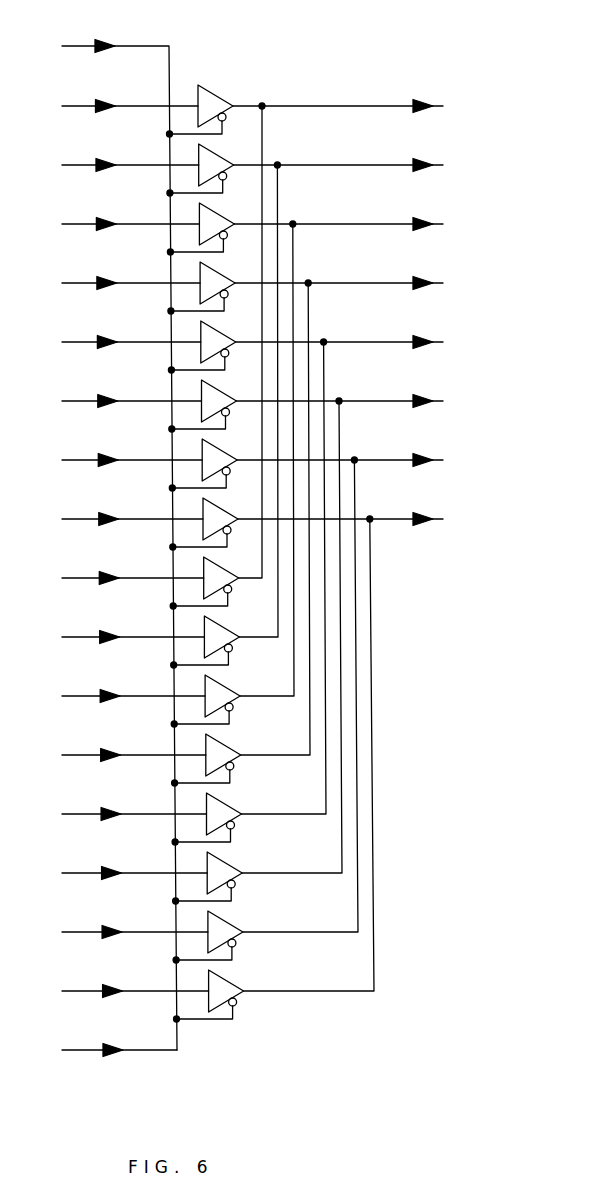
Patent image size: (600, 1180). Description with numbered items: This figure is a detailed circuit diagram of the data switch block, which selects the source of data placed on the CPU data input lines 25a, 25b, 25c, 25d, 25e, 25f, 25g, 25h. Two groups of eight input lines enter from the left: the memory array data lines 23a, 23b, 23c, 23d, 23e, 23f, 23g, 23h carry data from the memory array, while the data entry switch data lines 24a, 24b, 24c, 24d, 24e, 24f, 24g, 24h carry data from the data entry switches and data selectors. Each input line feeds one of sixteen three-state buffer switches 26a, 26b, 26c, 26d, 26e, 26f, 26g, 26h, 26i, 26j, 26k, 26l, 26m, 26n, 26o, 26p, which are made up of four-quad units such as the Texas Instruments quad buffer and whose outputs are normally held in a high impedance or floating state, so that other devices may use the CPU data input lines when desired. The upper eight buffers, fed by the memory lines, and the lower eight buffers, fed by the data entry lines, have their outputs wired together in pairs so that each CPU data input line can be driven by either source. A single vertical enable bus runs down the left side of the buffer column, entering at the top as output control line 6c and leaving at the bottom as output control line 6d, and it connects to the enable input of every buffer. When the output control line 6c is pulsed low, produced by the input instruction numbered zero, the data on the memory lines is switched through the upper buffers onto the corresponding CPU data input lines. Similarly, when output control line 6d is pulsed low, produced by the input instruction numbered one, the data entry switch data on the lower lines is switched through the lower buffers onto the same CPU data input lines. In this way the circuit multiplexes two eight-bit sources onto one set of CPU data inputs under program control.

The output control line 6c is at (132, 44).
The output control line 6d is at (158, 1052).
The memory array data line 23a is at (137, 104).
The memory array data line 23b is at (138, 163).
The memory array data line 23c is at (138, 222).
The memory array data line 23d is at (139, 281).
The memory array data line 23e is at (140, 340).
The memory array data line 23f is at (140, 399).
The memory array data line 23g is at (141, 458).
The memory array data line 23h is at (142, 517).
The data entry switch data line 24a is at (142, 576).
The data entry switch data line 24b is at (143, 635).
The data entry switch data line 24c is at (144, 694).
The data entry switch data line 24d is at (144, 753).
The data entry switch data line 24e is at (145, 812).
The data entry switch data line 24f is at (145, 871).
The data entry switch data line 24g is at (146, 930).
The data entry switch data line 24h is at (147, 989).
The CPU data input line 25a is at (367, 105).
The CPU data input line 25b is at (372, 164).
The CPU data input line 25c is at (372, 223).
The CPU data input line 25d is at (372, 282).
The CPU data input line 25e is at (375, 341).
The CPU data input line 25f is at (398, 400).
The CPU data input line 25g is at (405, 459).
The CPU data input line 25h is at (412, 518).
The 3-state buffer switch 26a is at (211, 85).
The 3-state buffer switch 26b is at (212, 144).
The 3-state buffer switch 26c is at (214, 203).
The 3-state buffer switch 26d is at (215, 262).
The 3-state buffer switch 26e is at (216, 321).
The 3-state buffer switch 26f is at (218, 380).
The 3-state buffer switch 26g is at (219, 439).
The 3-state buffer switch 26h is at (220, 498).
The 3-state buffer switch 26i is at (221, 557).
The 3-state buffer switch 26j is at (223, 616).
The 3-state buffer switch 26k is at (224, 675).
The 3-state buffer switch 26l is at (225, 734).
The 3-state buffer switch 26m is at (227, 793).
The 3-state buffer switch 26n is at (228, 852).
The 3-state buffer switch 26o is at (229, 911).
The 3-state buffer switch 26p is at (230, 970).